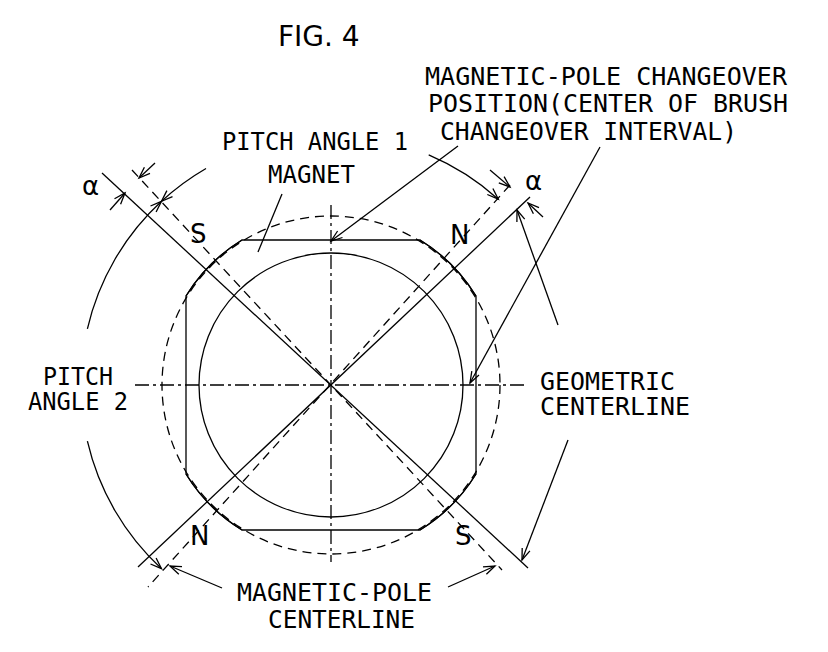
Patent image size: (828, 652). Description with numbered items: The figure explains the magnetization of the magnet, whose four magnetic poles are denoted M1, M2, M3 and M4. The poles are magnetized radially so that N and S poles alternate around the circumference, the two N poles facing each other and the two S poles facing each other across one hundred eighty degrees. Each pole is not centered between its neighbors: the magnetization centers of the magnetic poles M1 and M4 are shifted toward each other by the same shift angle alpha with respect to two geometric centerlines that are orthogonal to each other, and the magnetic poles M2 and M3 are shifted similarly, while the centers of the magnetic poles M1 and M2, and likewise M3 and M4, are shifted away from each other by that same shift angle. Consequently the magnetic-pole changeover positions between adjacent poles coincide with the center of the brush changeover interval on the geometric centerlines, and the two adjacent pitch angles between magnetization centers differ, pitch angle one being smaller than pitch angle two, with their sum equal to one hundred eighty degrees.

The magnetic pole M1 is at (452, 297).
The magnetic pole M2 is at (455, 482).
The magnetic pole M3 is at (203, 485).
The magnetic pole M4 is at (205, 290).